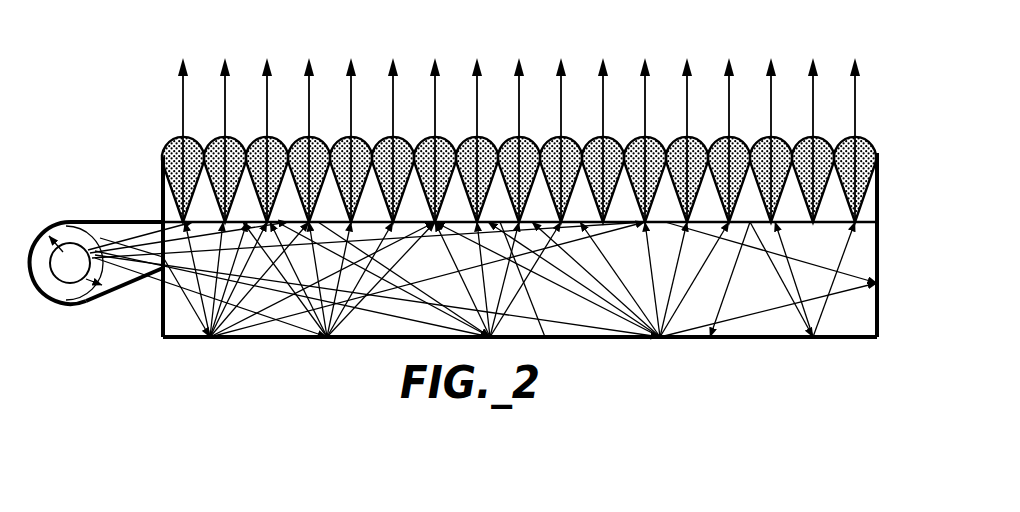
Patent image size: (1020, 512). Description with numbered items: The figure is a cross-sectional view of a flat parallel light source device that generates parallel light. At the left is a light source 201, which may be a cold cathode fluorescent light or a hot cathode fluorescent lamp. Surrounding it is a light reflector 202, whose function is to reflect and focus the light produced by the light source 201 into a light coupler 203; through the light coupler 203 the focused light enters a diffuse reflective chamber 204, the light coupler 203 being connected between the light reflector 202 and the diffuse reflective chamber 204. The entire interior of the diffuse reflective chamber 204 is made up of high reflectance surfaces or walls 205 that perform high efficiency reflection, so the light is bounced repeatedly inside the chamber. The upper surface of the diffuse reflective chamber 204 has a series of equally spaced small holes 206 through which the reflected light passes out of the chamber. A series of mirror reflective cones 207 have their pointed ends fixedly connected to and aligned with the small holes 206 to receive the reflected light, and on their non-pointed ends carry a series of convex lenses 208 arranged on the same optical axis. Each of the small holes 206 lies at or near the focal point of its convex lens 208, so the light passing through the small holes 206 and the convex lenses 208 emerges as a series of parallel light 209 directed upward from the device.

The light source 201 is at (63, 220).
The light reflector 202 is at (53, 303).
The light coupler 203 is at (137, 288).
The diffuse reflective chamber 204 is at (762, 332).
The high reflectance surfaces or walls 205 is at (176, 326).
The small holes 206 is at (858, 222).
The mirror reflective cones 207 is at (865, 203).
The convex lenses 208 is at (740, 137).
The parallel light 209 is at (375, 46).